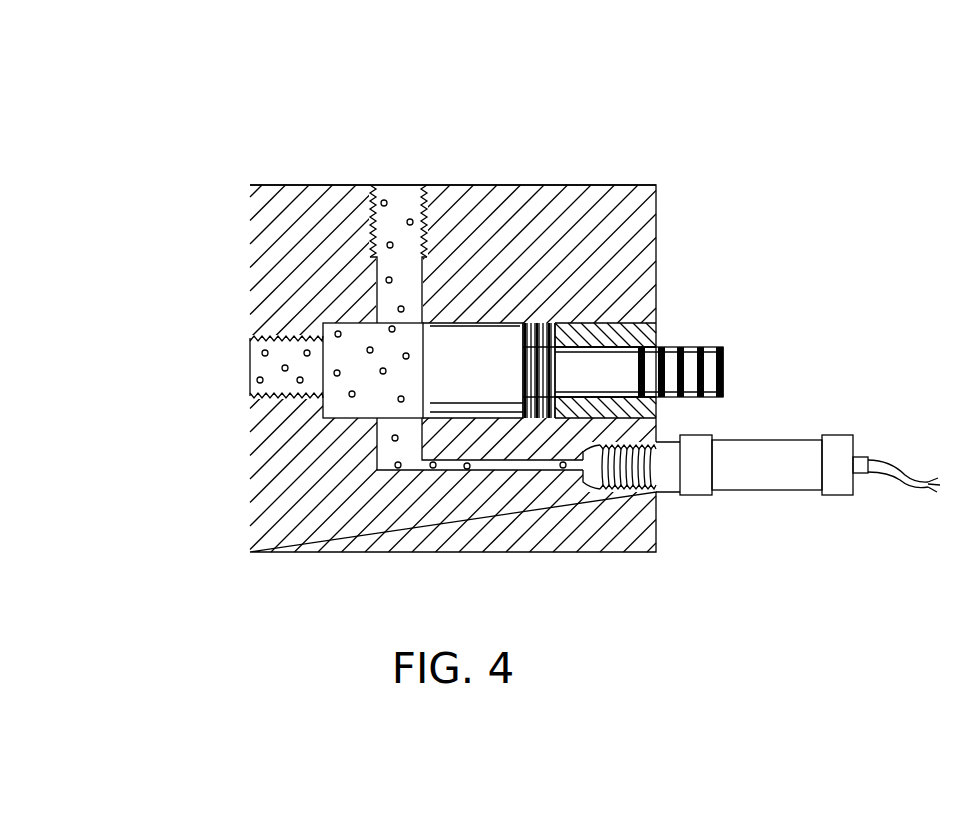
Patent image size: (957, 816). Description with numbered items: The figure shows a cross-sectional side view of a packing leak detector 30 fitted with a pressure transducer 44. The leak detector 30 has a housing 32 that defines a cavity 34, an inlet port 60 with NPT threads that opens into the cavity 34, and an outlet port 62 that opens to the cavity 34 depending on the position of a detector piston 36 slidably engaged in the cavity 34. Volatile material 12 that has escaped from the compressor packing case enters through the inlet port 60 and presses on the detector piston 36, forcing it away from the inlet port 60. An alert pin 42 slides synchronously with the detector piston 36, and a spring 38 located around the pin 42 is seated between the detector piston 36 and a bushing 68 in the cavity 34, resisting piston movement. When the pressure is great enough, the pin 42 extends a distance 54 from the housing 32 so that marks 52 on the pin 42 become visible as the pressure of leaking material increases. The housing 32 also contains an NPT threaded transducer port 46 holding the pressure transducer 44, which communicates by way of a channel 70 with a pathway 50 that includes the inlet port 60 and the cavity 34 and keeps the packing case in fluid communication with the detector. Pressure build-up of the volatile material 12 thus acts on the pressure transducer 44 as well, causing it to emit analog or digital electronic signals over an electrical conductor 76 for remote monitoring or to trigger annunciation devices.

The volatile material 12 is at (263, 350).
The leak detector 30 is at (485, 140).
The housing 32 is at (540, 185).
The cavity 34 is at (340, 410).
The detector piston 36 is at (447, 383).
The spring 38 is at (538, 420).
The alert pin 42 is at (625, 360).
The pressure transducer 44 is at (757, 470).
The transducer port 46 is at (593, 465).
The pathway 50 is at (256, 387).
The marks 52 is at (725, 362).
The distance 54 is at (660, 340).
The inlet port 60 is at (250, 366).
The outlet port 62 is at (400, 195).
The bushing 68 is at (657, 418).
The channel 70 is at (385, 437).
The electrical conductor 76 is at (905, 484).